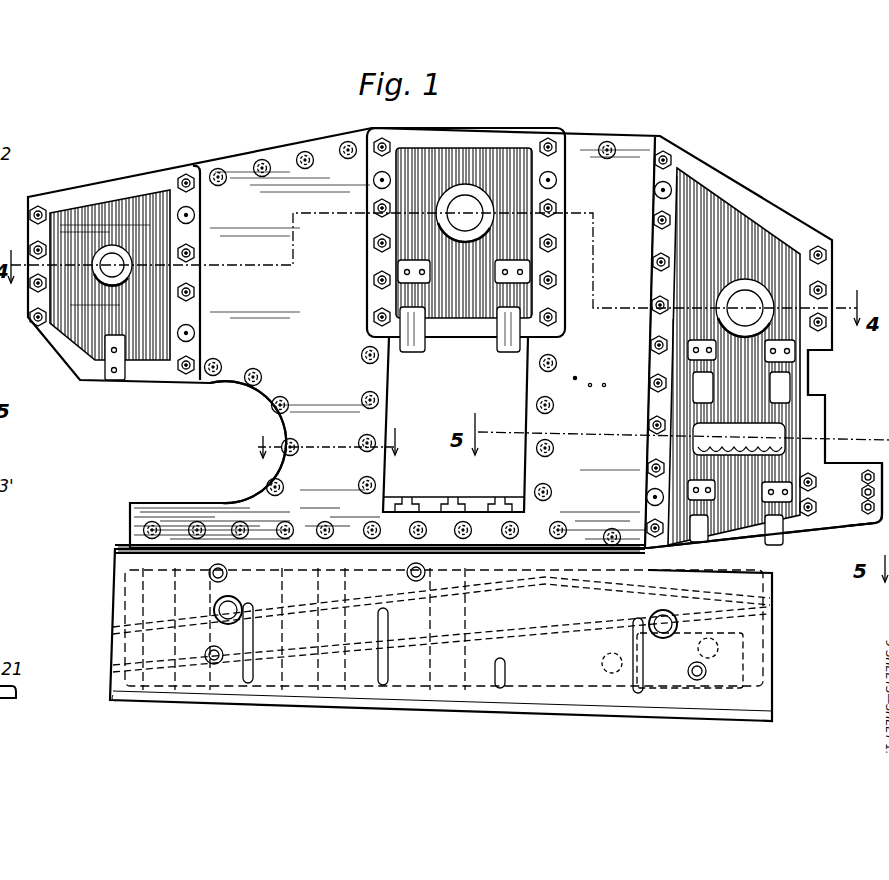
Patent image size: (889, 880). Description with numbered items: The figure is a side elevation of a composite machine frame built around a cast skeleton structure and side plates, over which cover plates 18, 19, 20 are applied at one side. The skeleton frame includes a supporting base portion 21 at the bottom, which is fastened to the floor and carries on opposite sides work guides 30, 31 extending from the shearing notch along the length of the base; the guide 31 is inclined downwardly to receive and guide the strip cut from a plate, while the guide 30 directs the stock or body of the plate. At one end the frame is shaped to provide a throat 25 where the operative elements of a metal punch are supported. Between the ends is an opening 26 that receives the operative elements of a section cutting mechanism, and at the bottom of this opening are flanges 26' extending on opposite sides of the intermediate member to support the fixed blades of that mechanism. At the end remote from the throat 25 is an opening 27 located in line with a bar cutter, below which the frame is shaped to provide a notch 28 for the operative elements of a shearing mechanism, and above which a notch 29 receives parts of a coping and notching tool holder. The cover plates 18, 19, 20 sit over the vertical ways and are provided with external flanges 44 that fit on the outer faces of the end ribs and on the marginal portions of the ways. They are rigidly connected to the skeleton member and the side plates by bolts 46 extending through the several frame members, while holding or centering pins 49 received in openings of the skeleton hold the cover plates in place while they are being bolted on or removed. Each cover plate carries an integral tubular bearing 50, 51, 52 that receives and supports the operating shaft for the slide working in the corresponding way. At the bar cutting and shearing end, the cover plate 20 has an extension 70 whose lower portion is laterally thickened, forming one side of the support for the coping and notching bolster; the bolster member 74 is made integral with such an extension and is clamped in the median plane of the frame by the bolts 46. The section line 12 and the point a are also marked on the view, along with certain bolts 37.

The cover plate 18 is at (147, 192).
The cover plate 19 is at (470, 152).
The cover plate 20 is at (733, 222).
The base portion 21 is at (320, 688).
The throat 25 is at (243, 390).
The opening 26 is at (455, 424).
The flanges 26' is at (453, 491).
The opening 27 is at (760, 432).
The notch 28 is at (730, 556).
The notch 29 is at (810, 376).
The work guide 30 is at (622, 566).
The work guide 31 is at (486, 614).
The bolts adjacent notch 37 is at (283, 484).
The external flanges 44 is at (205, 323).
The bolts 46 is at (196, 293).
The holding or centering pins 49 is at (196, 216).
The tubular bearing 50 is at (110, 247).
The tubular bearing 51 is at (478, 200).
The tubular bearing 52 is at (752, 290).
The extension 70 is at (848, 513).
The bolster member 74 is at (652, 238).
The section line 12 is at (327, 443).
The bolt a is at (262, 373).